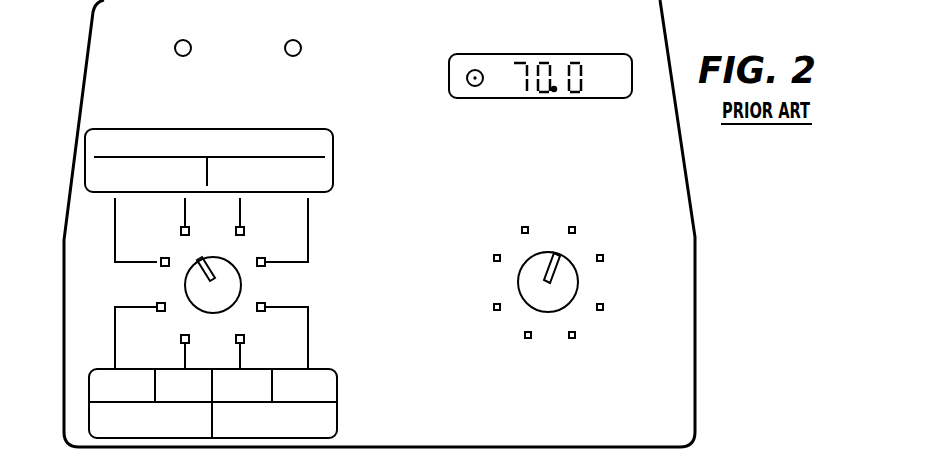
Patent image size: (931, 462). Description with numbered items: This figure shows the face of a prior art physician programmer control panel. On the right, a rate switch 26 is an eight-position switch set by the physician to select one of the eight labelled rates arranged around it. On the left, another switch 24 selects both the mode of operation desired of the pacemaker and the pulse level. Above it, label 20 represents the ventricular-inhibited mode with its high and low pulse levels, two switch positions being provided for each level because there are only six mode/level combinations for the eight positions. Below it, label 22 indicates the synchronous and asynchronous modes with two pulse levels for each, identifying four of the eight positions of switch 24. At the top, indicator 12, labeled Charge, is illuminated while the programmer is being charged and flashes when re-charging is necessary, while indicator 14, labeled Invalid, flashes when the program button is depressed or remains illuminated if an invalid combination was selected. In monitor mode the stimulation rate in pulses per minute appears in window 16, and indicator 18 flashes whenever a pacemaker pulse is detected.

The charge indicator 12 is at (190, 54).
The invalid indicator 14 is at (287, 56).
The window 16 is at (590, 99).
The indicator 18 is at (470, 85).
The label 20 is at (334, 169).
The label 22 is at (338, 403).
The switch 24 is at (215, 257).
The rate switch 26 is at (536, 256).